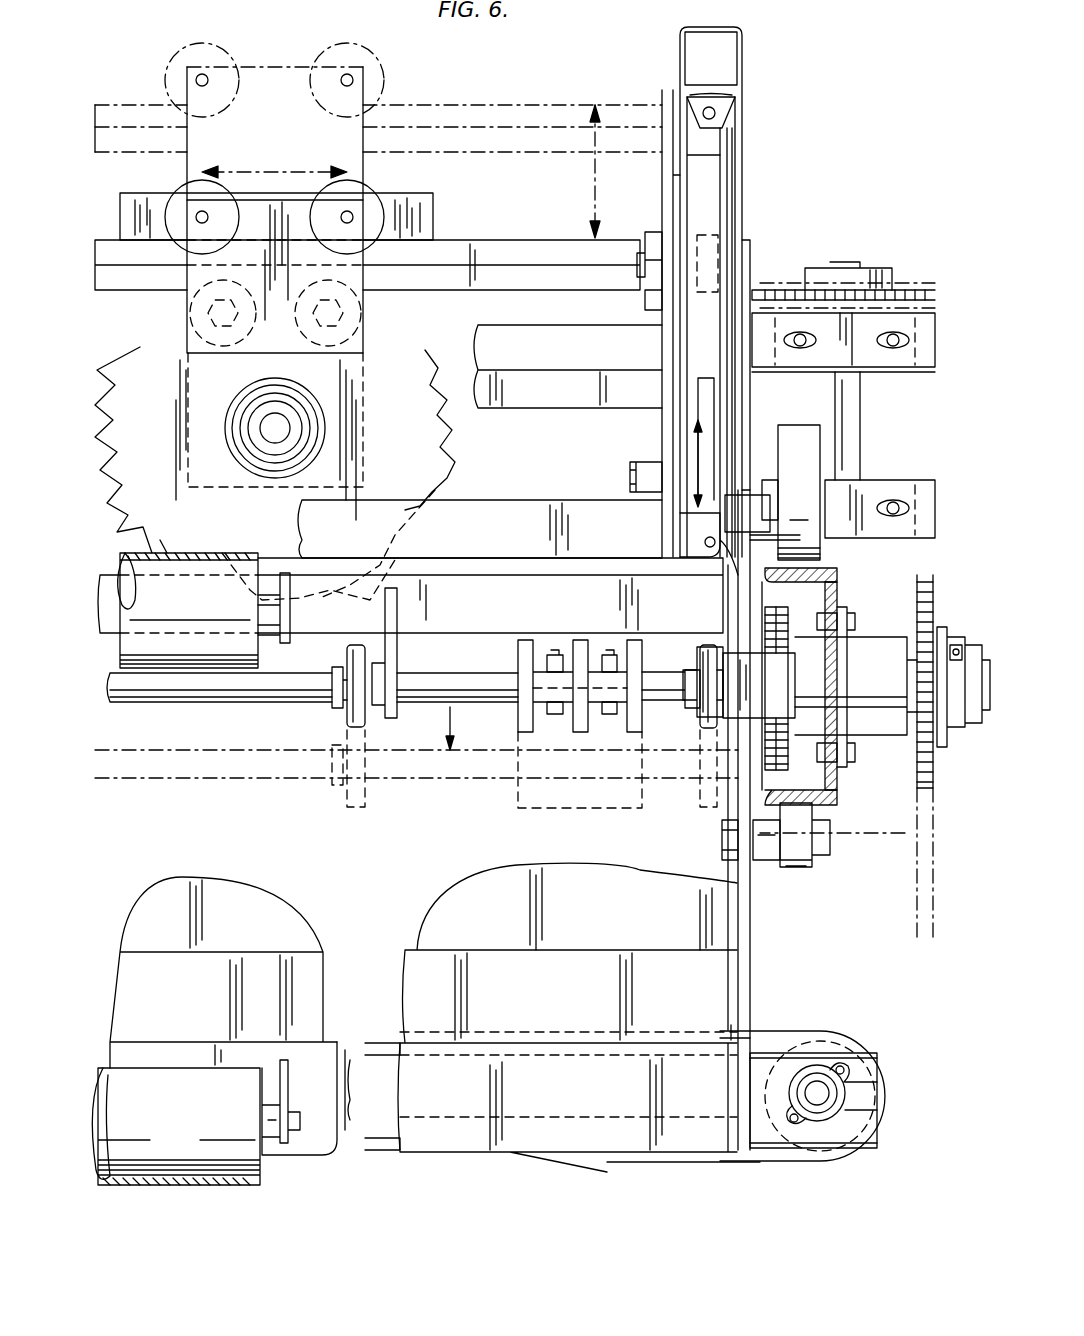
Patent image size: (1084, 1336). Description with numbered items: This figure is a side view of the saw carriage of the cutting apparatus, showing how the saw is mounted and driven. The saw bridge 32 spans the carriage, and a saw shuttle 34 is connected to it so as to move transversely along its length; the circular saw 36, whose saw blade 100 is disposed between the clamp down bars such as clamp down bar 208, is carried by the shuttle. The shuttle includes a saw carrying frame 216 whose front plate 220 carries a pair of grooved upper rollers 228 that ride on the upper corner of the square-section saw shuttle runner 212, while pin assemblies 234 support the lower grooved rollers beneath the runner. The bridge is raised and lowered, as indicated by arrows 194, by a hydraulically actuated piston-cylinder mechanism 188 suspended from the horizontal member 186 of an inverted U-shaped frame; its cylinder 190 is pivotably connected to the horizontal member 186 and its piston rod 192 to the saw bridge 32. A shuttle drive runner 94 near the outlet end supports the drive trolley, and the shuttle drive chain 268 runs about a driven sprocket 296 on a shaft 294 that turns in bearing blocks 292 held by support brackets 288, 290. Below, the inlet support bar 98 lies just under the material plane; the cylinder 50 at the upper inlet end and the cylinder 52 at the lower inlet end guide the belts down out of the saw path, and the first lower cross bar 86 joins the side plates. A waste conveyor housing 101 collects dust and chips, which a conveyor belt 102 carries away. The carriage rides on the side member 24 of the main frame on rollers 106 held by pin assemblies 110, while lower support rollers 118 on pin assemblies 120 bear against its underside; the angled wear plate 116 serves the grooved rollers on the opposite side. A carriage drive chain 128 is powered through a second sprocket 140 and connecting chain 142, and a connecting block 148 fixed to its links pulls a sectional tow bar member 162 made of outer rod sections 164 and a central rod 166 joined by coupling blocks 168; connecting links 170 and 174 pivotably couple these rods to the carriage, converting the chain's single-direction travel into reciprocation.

The side member 24 is at (835, 790).
The saw bridge 32 is at (496, 206).
The saw shuttle 34 is at (383, 311).
The circular saw 36 is at (455, 455).
The cylinder 50 is at (262, 648).
The cylinder 52 is at (228, 1178).
The first lower cross bar 86 is at (312, 1138).
The shuttle drive runner 94 is at (588, 355).
The inlet support bar 98 is at (525, 604).
The saw blade 100 is at (162, 440).
The waste conveyor housing 101 is at (380, 902).
The conveyor belt 102 is at (800, 1030).
The rollers 106 is at (823, 454).
The axle or pin assembly 110 is at (771, 486).
The angled wear plate 116 is at (824, 570).
The lower support rollers 118 is at (802, 866).
The axle or pin assemblies 120 is at (765, 850).
The carriage drive chain 128 is at (772, 608).
The second sprocket 140 is at (917, 622).
The connecting chain 142 is at (915, 826).
The connecting block 148 is at (740, 682).
The sectional tow bar member 162 is at (243, 705).
The outer rod sections 164 is at (652, 678).
The central rod 166 is at (233, 697).
The coupling blocks 168 is at (520, 660).
The connecting link 170 is at (712, 712).
The connecting links 174 is at (350, 712).
The horizontal member 186 is at (742, 30).
The hydraulically actuated piston-cylinder mechanism 188 is at (744, 129).
The cylinder 190 is at (718, 190).
The piston rod 192 is at (740, 425).
The arrows 194 is at (596, 212).
The clamp down bar 208 is at (516, 537).
The saw shuttle runner 212 is at (517, 242).
The saw carrying frame 216 is at (186, 296).
The front plate 220 is at (195, 258).
The grooved upper rollers 228 is at (190, 190).
The pin assemblies 234 is at (196, 328).
The shuttle drive chain 268 is at (758, 280).
The support bracket 288 is at (925, 494).
The support bracket 290 is at (933, 368).
The bearing block 292 is at (870, 356).
The shaft 294 is at (855, 412).
The driven sprocket 296 is at (910, 290).